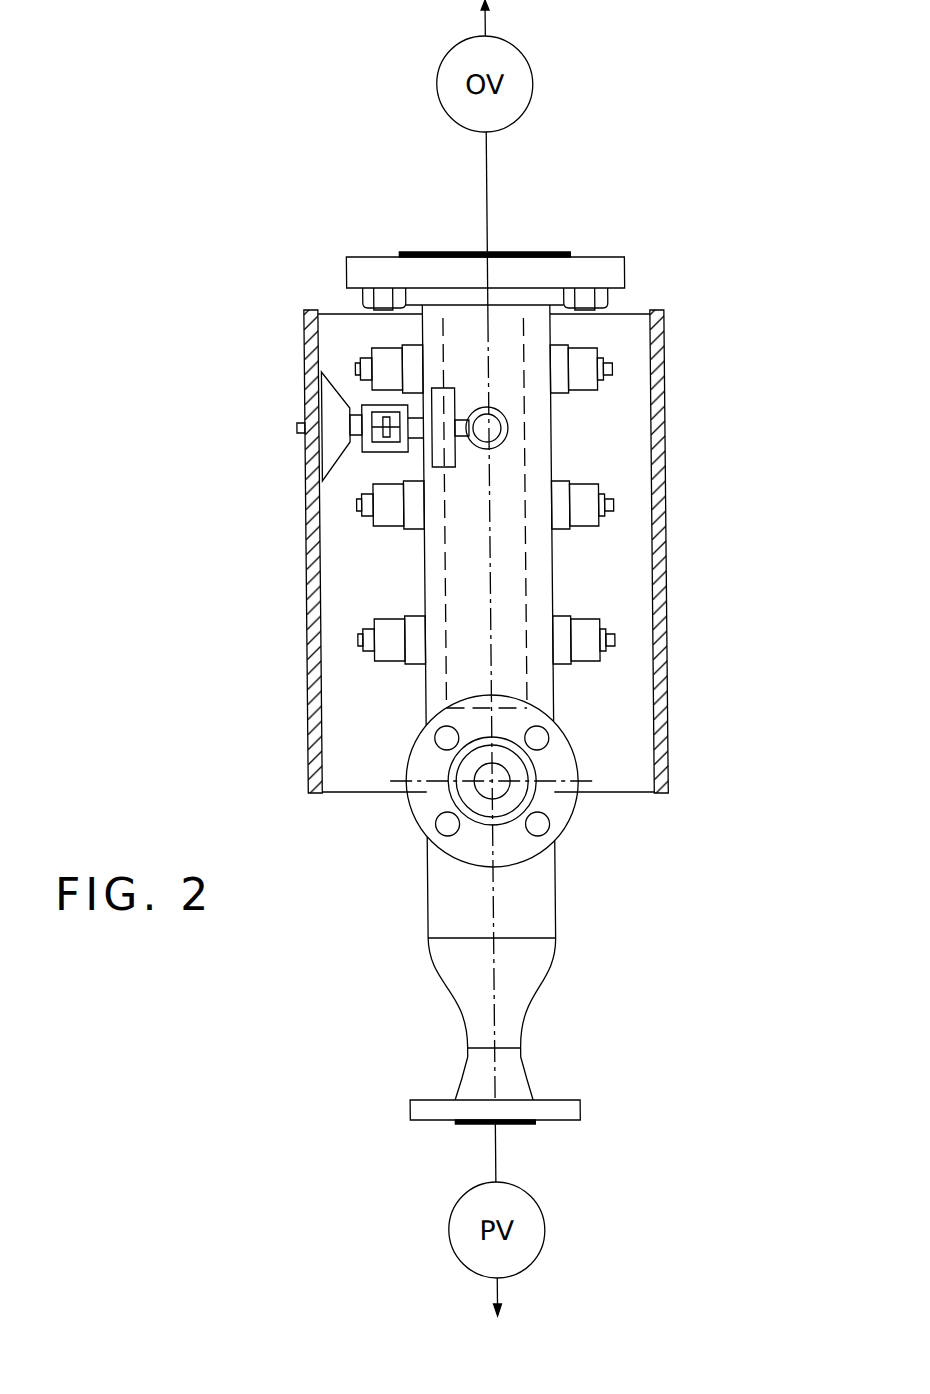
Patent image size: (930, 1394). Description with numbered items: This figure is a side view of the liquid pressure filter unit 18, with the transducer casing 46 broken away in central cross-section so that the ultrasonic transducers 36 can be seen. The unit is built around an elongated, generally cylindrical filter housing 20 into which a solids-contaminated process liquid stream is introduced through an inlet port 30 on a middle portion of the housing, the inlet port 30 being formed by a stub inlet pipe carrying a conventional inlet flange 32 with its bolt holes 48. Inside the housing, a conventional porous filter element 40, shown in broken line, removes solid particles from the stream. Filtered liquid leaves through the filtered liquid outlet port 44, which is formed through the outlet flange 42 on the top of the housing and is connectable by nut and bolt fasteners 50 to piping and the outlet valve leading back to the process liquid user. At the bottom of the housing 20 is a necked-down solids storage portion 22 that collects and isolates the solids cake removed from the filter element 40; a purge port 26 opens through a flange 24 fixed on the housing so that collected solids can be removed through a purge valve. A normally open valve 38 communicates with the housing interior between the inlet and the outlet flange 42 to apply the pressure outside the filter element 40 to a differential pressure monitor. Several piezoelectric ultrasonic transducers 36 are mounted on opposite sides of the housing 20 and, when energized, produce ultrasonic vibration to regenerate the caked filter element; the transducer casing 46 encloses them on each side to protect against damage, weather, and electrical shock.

The filter unit 18 is at (170, 455).
The filter housing 20 is at (420, 901).
The solids storage portion 22 is at (524, 1004).
The flange 24 is at (572, 1116).
The purge port 26 is at (475, 1123).
The inlet port 30 is at (485, 786).
The inlet flange 32 is at (562, 826).
The ultrasonic transducers 36 is at (352, 369).
The valve 38 is at (300, 407).
The filter element 40 is at (432, 566).
The outlet flange 42 is at (620, 272).
The filtered liquid outlet port 44 is at (444, 255).
The transducer casing 46 is at (304, 313).
The bolt holes 48 is at (538, 818).
The nut and bolt fasteners 50 is at (343, 291).